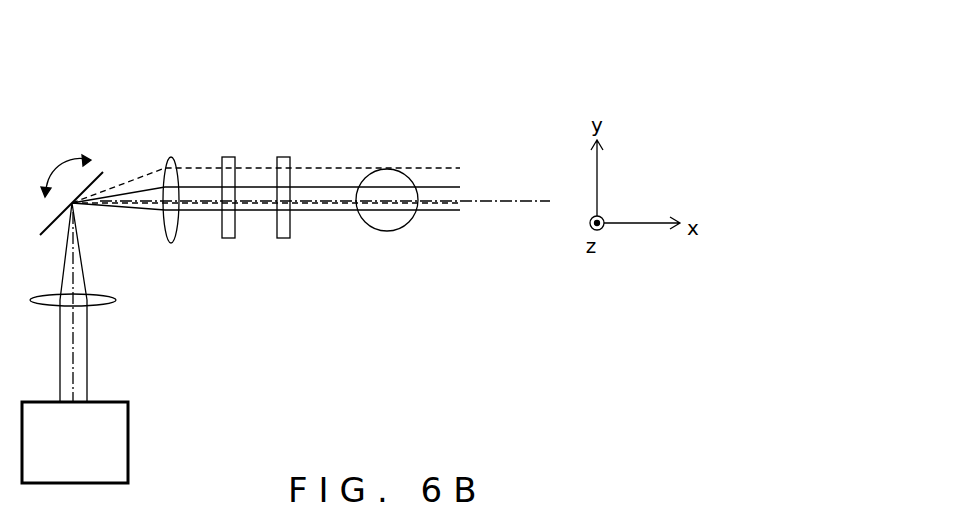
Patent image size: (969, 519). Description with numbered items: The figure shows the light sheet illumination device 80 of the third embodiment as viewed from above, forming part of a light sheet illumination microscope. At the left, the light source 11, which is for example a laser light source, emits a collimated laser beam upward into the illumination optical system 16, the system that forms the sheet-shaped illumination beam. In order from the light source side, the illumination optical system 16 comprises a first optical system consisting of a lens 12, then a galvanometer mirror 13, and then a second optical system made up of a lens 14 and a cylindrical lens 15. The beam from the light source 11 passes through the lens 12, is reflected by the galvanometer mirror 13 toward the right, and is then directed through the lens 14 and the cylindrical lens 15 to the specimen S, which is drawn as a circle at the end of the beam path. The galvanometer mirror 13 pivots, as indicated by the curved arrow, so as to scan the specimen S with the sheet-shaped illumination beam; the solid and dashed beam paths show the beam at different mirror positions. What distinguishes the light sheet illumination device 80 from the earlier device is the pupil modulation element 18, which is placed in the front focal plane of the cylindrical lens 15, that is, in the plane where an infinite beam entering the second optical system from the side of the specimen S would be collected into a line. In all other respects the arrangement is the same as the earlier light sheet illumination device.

The light source 11 is at (128, 452).
The lens 12 is at (117, 300).
The galvanometer mirror 13 is at (47, 230).
The lens 14 is at (170, 241).
The cylindrical lens 15 is at (283, 238).
The illumination optical system 16 is at (135, 347).
The pupil modulation element 18 is at (227, 157).
The specimen S is at (412, 170).
The light sheet illumination device 80 is at (583, 57).